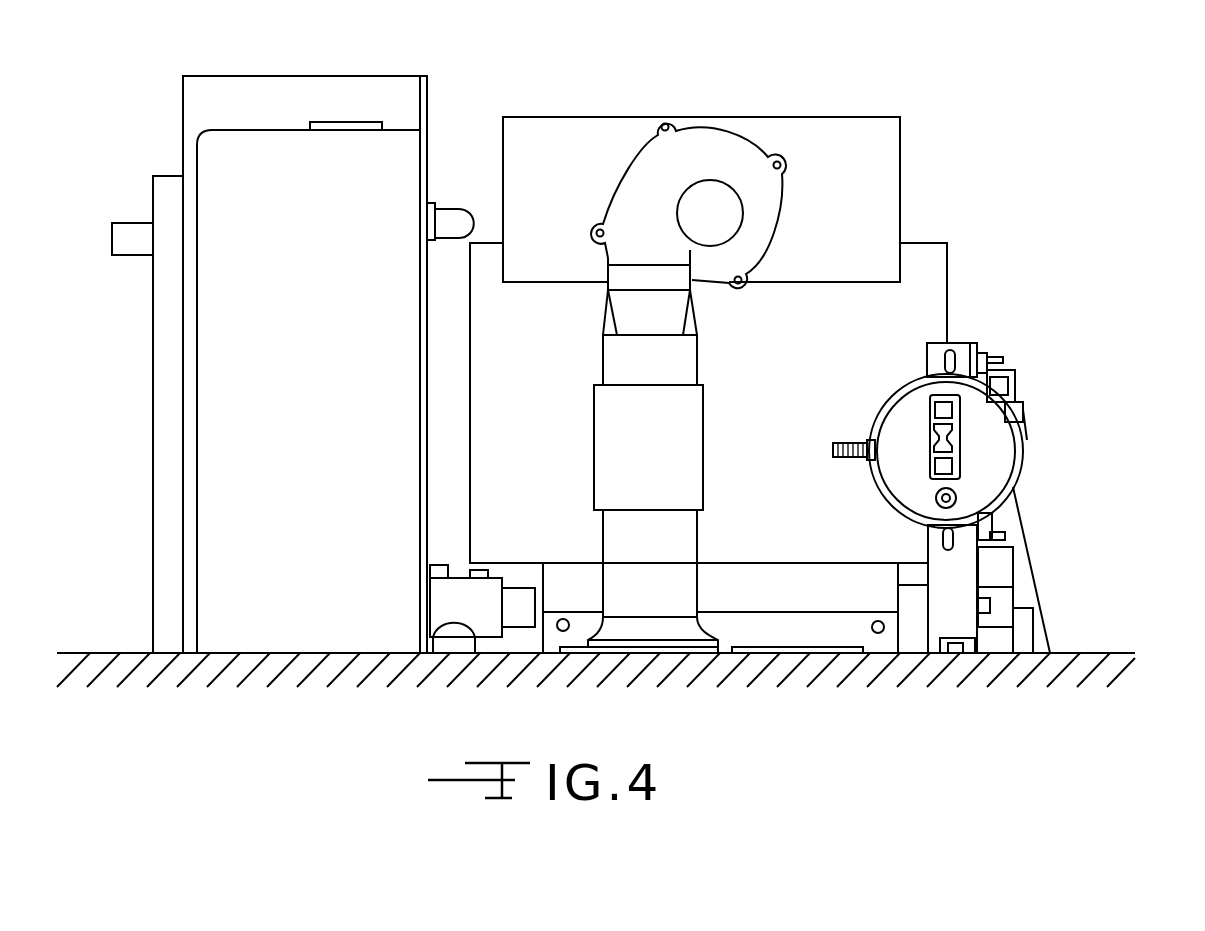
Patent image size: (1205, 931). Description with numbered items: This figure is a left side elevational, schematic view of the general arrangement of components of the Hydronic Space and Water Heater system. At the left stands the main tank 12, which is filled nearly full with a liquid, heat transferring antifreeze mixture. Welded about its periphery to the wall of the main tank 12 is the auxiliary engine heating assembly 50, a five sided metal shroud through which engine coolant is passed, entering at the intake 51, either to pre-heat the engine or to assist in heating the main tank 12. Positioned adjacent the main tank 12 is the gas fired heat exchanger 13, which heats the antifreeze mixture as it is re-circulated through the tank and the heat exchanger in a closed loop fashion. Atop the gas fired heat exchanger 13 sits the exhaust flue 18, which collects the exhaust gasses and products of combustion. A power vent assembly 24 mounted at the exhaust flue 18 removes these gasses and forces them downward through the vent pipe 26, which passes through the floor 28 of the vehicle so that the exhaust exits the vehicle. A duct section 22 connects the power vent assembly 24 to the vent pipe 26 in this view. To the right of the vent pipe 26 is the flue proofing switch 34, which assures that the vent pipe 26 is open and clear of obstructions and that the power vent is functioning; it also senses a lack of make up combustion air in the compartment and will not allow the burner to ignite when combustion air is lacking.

The main tank 12 is at (338, 260).
The gas fired heat exchanger 13 is at (767, 502).
The exhaust flue 18 is at (867, 142).
The duct assembly 22 is at (588, 367).
The power vent assembly 24 is at (698, 158).
The vent pipe 26 is at (623, 440).
The floor 28 is at (1107, 663).
The flue proofing switch 34 is at (1022, 412).
The auxiliary engine heating assembly 50 is at (182, 328).
The intake 51 is at (128, 223).